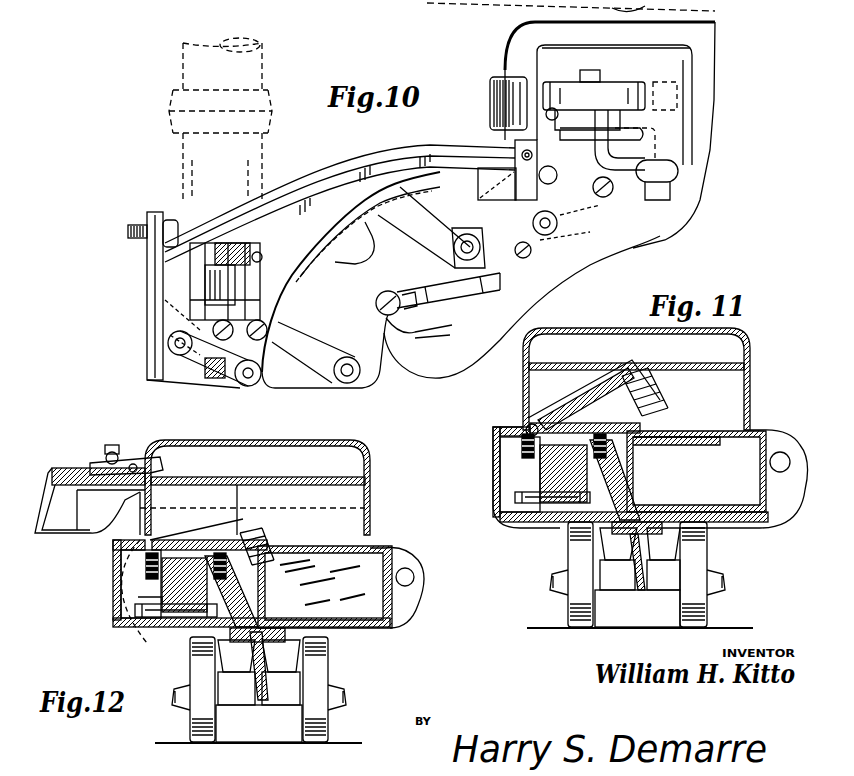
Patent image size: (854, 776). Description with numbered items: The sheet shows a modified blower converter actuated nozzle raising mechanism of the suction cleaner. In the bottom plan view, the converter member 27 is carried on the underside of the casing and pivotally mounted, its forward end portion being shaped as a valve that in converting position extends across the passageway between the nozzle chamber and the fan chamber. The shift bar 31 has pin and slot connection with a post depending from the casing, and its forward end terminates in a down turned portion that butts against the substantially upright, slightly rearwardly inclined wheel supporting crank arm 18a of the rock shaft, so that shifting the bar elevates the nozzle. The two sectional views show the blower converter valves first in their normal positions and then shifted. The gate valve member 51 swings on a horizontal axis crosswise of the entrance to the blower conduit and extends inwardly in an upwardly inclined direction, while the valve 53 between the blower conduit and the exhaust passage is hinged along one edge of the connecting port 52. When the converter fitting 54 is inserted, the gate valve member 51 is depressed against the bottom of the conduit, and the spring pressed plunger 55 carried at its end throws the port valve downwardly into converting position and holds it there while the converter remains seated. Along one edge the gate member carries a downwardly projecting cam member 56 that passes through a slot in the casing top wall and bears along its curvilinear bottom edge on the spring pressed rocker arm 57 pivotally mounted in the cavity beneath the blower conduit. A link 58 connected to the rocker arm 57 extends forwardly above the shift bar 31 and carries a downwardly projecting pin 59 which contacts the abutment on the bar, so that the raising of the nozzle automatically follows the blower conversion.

In FIG. 10, the wheel supporting crank arm 18a is at (661, 165).
In FIG. 10, the converter member 27 is at (339, 257).
In FIG. 10, the shift bar 31 is at (572, 216).
In FIG. 10, the gate valve member 51 is at (195, 277).
In FIG. 11, the gate valve member 51 is at (574, 400).
In FIG. 12, the gate valve member 51 is at (196, 557).
In FIG. 11, the connecting port 52 is at (698, 438).
In FIG. 12, the connecting port 52 is at (357, 618).
In FIG. 11, the valve 53 is at (716, 428).
In FIG. 12, the valve 53 is at (362, 548).
In FIG. 12, the converter fitting 54 is at (103, 518).
In FIG. 11, the spring pressed plunger 55 is at (648, 404).
In FIG. 12, the spring pressed plunger 55 is at (272, 550).
In FIG. 11, the cam member 56 is at (590, 415).
In FIG. 10, the rocker arm 57 is at (228, 295).
In FIG. 11, the rocker arm 57 is at (545, 475).
In FIG. 12, the rocker arm 57 is at (168, 612).
In FIG. 10, the link 58 is at (352, 192).
In FIG. 11, the link 58 is at (530, 520).
In FIG. 12, the link 58 is at (135, 620).
In FIG. 10, the pin 59 is at (549, 166).